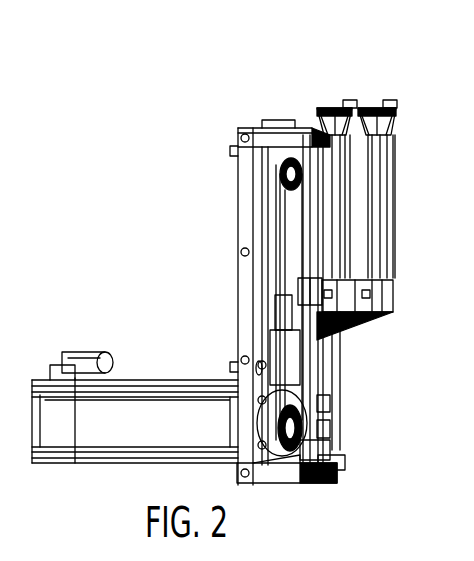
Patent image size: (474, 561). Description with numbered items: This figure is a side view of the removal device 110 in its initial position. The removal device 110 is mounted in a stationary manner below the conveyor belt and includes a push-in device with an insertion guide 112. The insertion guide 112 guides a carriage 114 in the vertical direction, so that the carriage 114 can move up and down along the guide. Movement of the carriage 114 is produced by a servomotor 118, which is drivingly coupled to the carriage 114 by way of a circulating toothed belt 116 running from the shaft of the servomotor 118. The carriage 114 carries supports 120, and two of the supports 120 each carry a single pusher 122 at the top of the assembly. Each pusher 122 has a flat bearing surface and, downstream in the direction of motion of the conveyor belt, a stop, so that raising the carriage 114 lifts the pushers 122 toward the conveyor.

The removal device 110 is at (128, 290).
The insertion guide 112 is at (412, 136).
The carriage 114 is at (396, 292).
The circulating toothed belt 116 is at (272, 234).
The servomotor 118 is at (182, 384).
The supports 120 is at (330, 186).
The pusher 122 is at (342, 93).